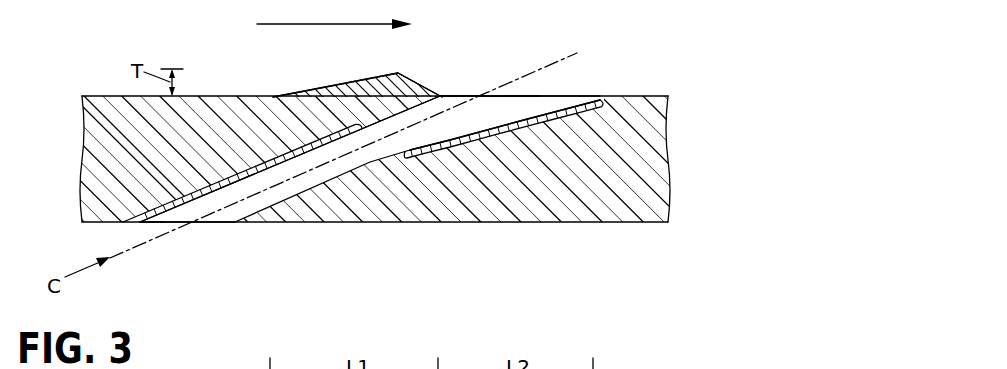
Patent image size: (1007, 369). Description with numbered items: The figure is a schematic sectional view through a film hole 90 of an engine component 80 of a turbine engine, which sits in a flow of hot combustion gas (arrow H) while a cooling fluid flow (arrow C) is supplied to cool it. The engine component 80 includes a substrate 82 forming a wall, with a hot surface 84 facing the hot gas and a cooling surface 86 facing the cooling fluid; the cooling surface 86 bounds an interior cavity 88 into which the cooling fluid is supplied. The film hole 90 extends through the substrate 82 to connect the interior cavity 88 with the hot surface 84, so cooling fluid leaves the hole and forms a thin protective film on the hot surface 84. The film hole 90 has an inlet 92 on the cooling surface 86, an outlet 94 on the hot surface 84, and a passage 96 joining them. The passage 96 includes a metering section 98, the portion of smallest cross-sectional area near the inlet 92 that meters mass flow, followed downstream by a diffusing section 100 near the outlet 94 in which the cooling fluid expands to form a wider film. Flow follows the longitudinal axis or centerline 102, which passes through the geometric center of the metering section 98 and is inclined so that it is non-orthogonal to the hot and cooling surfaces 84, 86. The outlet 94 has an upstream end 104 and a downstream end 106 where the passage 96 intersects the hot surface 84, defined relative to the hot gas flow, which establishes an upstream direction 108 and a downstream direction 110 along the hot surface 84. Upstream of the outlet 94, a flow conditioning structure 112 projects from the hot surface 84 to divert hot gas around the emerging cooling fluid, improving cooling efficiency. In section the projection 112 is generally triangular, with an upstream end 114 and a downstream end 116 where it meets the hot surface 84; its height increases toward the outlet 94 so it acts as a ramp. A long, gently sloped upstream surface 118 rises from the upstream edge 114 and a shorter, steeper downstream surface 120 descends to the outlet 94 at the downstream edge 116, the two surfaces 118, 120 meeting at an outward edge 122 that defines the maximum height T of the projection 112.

The engine component 80 is at (109, 88).
The substrate 82 is at (638, 171).
The hot surface 84 is at (670, 96).
The cooling surface 86 is at (537, 222).
The interior cavity 88 is at (149, 294).
The film hole 90 is at (328, 190).
The inlet 92 is at (148, 222).
The outlet 94 is at (540, 96).
The passage 96 is at (284, 189).
The metering section 98 is at (211, 186).
The diffusing section 100 is at (500, 133).
The centerline 102 is at (167, 227).
The upstream end 104 is at (487, 96).
The downstream end 106 is at (597, 96).
The upstream direction 108 is at (306, 28).
The downstream direction 110 is at (384, 20).
The flow conditioning structure 112 is at (341, 67).
The upstream end 114 is at (277, 97).
The downstream end 116 is at (487, 96).
The upstream surface 118 is at (322, 93).
The downstream surface 120 is at (440, 96).
The outward edge 122 is at (403, 72).